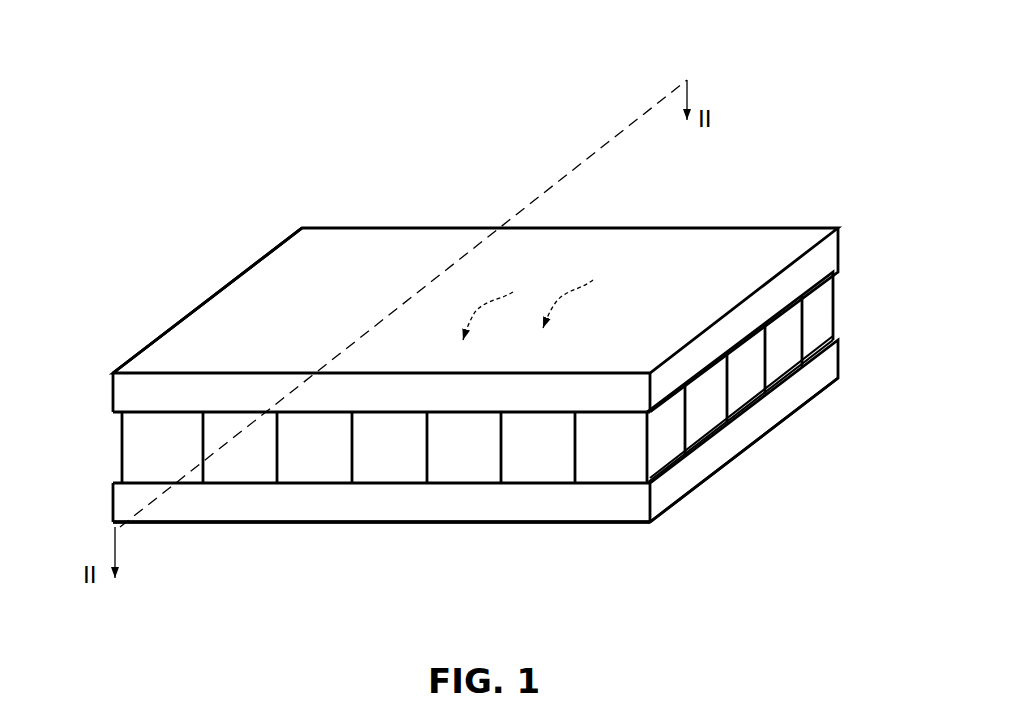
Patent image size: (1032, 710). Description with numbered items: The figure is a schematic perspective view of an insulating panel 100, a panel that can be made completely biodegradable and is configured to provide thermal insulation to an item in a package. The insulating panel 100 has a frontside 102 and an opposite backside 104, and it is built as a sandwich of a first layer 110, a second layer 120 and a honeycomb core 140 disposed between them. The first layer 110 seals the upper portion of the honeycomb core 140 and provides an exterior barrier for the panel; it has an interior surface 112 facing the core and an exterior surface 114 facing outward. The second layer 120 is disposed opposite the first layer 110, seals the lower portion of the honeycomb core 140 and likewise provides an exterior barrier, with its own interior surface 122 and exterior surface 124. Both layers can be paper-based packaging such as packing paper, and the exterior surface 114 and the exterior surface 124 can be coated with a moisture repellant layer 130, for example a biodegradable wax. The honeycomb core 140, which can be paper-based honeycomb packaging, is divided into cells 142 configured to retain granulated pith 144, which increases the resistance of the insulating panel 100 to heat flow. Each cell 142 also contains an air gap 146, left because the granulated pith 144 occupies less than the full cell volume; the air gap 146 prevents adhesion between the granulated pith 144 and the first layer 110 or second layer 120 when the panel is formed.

The insulating panel 100 is at (790, 95).
The frontside 102 is at (742, 250).
The backside 104 is at (588, 545).
The first layer 110 is at (808, 273).
The interior surface 112 is at (113, 414).
The exterior surface 114 is at (262, 290).
The second layer 120 is at (688, 467).
The interior surface 122 is at (717, 437).
The exterior surface 124 is at (402, 522).
The moisture repellant layer 130 is at (215, 338).
The honeycomb core 140 is at (104, 452).
The cells 142 is at (803, 363).
The granulated pith 144 is at (499, 302).
The air gap 146 is at (579, 290).